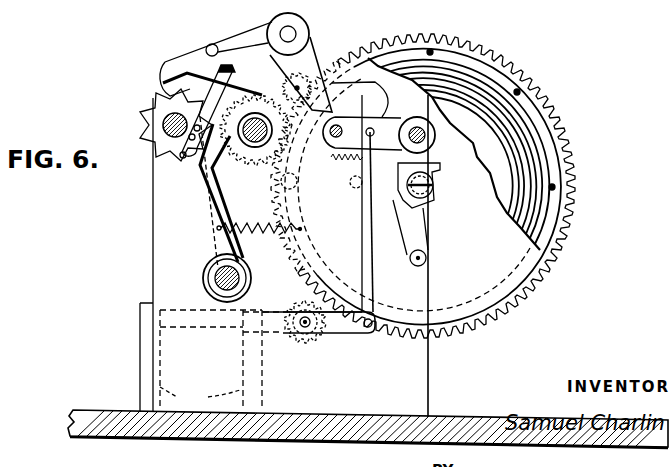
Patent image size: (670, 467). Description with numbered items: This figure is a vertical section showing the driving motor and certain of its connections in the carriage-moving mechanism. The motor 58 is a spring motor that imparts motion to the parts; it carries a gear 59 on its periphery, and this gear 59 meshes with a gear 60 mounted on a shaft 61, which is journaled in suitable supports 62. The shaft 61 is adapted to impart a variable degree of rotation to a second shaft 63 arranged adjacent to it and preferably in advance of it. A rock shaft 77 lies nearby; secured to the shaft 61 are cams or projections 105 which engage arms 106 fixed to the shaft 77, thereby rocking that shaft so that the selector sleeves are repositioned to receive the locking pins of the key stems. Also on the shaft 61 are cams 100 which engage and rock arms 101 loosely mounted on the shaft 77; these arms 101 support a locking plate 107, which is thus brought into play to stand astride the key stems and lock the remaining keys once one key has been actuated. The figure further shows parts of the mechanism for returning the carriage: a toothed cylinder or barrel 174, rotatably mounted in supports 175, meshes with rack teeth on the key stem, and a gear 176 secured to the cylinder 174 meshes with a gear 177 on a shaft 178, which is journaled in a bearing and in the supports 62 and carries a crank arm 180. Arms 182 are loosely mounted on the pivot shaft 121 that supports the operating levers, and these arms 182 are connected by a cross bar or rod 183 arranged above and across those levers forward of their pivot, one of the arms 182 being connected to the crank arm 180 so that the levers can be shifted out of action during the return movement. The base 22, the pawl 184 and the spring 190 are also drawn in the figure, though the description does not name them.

The base 22 is at (448, 414).
The motor 58 is at (540, 158).
The gear 59 is at (513, 63).
The gear 60 is at (288, 182).
The shaft 61 is at (254, 113).
The supports 62 is at (430, 352).
The shaft 63 is at (160, 143).
The rock shaft 77 is at (215, 272).
The cams 100 is at (225, 75).
The arms 101 is at (198, 168).
The cams 105 is at (243, 150).
The arms 106 is at (212, 170).
The locking plate 107 is at (228, 32).
The pivot 121 is at (415, 128).
The toothed cylinder 174 is at (187, 327).
The supports 175 is at (200, 397).
The gear 176 is at (287, 338).
The gear 177 is at (307, 305).
The shaft 178 is at (304, 328).
The crank arm 180 is at (340, 335).
The arms 182 is at (360, 186).
The cross bar 183 is at (333, 143).
The pawl 184 is at (372, 241).
The spring 190 is at (245, 222).